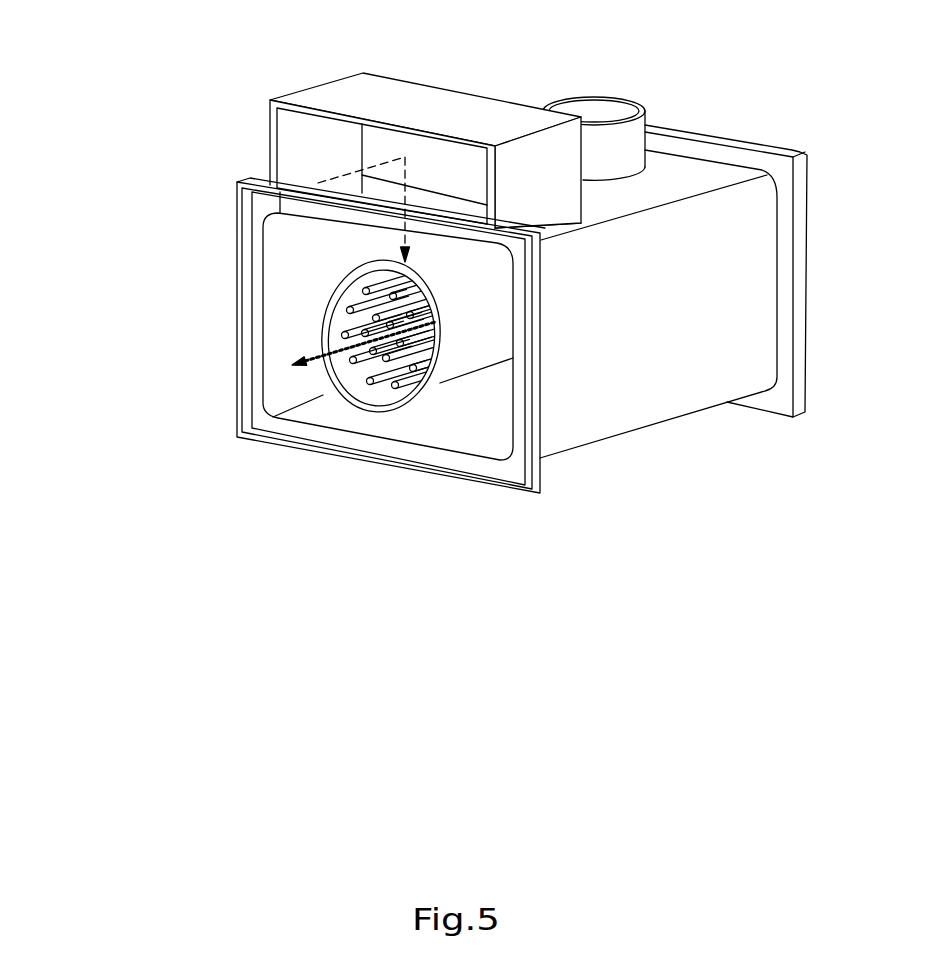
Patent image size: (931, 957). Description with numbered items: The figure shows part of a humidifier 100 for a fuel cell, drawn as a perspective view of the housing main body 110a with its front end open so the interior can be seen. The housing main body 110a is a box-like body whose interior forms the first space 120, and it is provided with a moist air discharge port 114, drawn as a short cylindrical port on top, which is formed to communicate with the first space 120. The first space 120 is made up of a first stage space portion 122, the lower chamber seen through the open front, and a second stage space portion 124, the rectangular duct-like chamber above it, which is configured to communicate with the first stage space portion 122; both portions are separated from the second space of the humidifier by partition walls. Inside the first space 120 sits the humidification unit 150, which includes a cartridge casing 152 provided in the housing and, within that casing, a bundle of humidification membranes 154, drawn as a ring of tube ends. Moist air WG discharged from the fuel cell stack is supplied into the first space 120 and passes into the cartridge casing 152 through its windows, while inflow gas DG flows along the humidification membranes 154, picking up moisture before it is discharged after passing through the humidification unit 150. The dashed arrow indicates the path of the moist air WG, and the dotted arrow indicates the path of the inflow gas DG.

The humidifier 100 is at (435, 295).
The housing main body 110a is at (650, 398).
The moist air discharge port 114 is at (617, 112).
The first space 120 is at (322, 283).
The first stage space portion 122 is at (296, 276).
The second stage space portion 124 is at (296, 150).
The humidification unit 150 is at (393, 421).
The cartridge casing 152 is at (357, 400).
The humidification membranes 154 is at (382, 378).
The moist air WG is at (343, 177).
The inflow gas DG is at (303, 362).